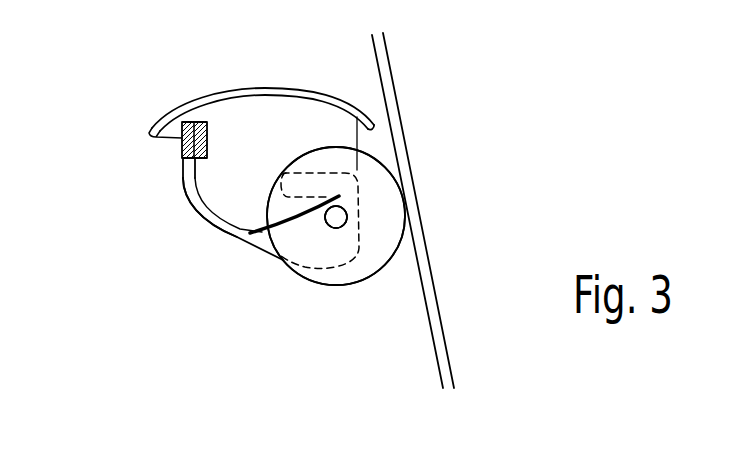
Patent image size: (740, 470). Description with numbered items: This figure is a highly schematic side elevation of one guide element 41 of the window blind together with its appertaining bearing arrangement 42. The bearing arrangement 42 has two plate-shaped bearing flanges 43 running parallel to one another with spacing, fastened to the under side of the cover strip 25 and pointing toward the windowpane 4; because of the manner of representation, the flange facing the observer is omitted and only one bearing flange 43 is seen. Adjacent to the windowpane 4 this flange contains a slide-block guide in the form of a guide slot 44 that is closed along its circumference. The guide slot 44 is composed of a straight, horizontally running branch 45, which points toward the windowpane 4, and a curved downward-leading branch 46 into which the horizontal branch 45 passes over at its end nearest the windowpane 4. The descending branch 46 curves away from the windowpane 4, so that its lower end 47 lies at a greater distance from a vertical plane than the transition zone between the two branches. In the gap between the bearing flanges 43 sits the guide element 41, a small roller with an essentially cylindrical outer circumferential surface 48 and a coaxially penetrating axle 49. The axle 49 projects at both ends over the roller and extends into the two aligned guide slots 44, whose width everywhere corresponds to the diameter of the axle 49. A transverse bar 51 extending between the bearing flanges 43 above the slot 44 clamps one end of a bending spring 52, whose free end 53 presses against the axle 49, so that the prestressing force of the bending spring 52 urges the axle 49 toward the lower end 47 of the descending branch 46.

The windowpane 4 is at (382, 65).
The cover strip 25 is at (311, 97).
The guide element 41 is at (312, 303).
The bearing arrangement 42 is at (148, 237).
The bearing flanges 43 is at (183, 193).
The guide slot 44 is at (350, 168).
The straight horizontally running branch 45 is at (315, 187).
The curved downward-leading branch 46 is at (347, 216).
The lower end 47 is at (337, 228).
The cylindrical outer circumferential surface 48 is at (295, 277).
The axle 49 is at (347, 219).
The transverse bar 51 is at (182, 150).
The bending spring 52 is at (230, 233).
The free end 53 is at (160, 90).